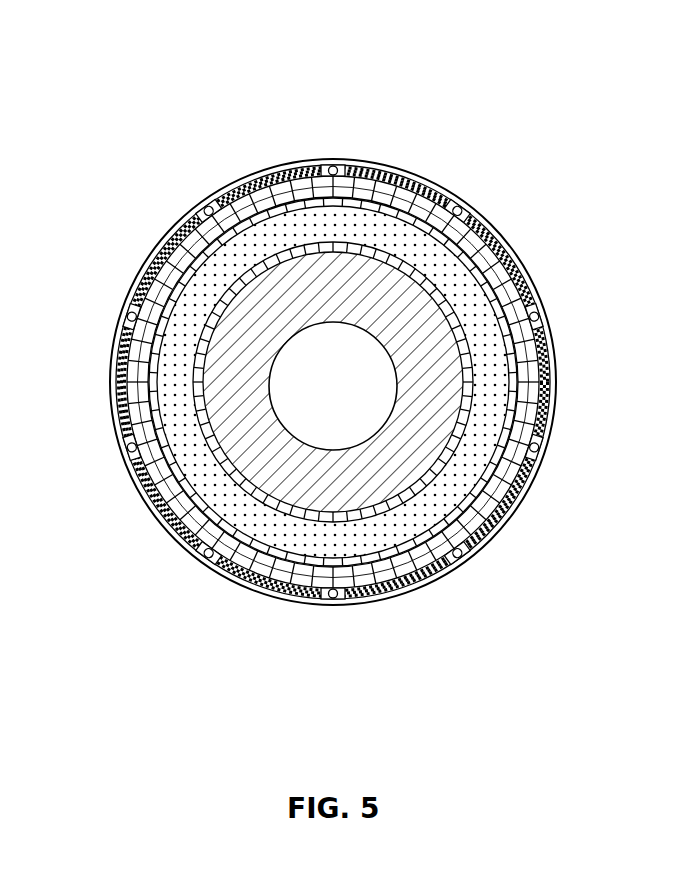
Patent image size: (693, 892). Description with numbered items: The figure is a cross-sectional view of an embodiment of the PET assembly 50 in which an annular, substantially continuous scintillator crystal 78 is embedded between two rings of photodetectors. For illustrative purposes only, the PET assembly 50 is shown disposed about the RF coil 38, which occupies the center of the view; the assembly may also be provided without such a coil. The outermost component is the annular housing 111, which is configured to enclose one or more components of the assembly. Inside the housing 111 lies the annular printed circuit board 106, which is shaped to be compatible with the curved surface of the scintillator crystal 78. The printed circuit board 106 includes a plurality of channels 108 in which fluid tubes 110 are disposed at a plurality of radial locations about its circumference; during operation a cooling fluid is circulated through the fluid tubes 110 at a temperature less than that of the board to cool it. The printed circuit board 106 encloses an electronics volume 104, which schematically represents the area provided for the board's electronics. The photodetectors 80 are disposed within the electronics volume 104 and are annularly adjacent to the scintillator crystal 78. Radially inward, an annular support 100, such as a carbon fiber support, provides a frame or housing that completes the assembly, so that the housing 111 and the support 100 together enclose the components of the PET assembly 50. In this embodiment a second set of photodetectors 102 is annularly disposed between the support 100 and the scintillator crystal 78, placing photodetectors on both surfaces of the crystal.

The PET assembly 50 is at (357, 374).
The annular housing 111 is at (418, 178).
The second set of photodetectors 102 is at (480, 377).
The RF coil 38 is at (435, 405).
The annular support 100 is at (418, 485).
The printed circuit board 106 is at (410, 587).
The channels 108 is at (347, 597).
The fluid tubes 110 is at (332, 598).
The electronics volume 104 is at (280, 437).
The photodetectors 80 is at (172, 535).
The scintillator crystal 78 is at (343, 395).